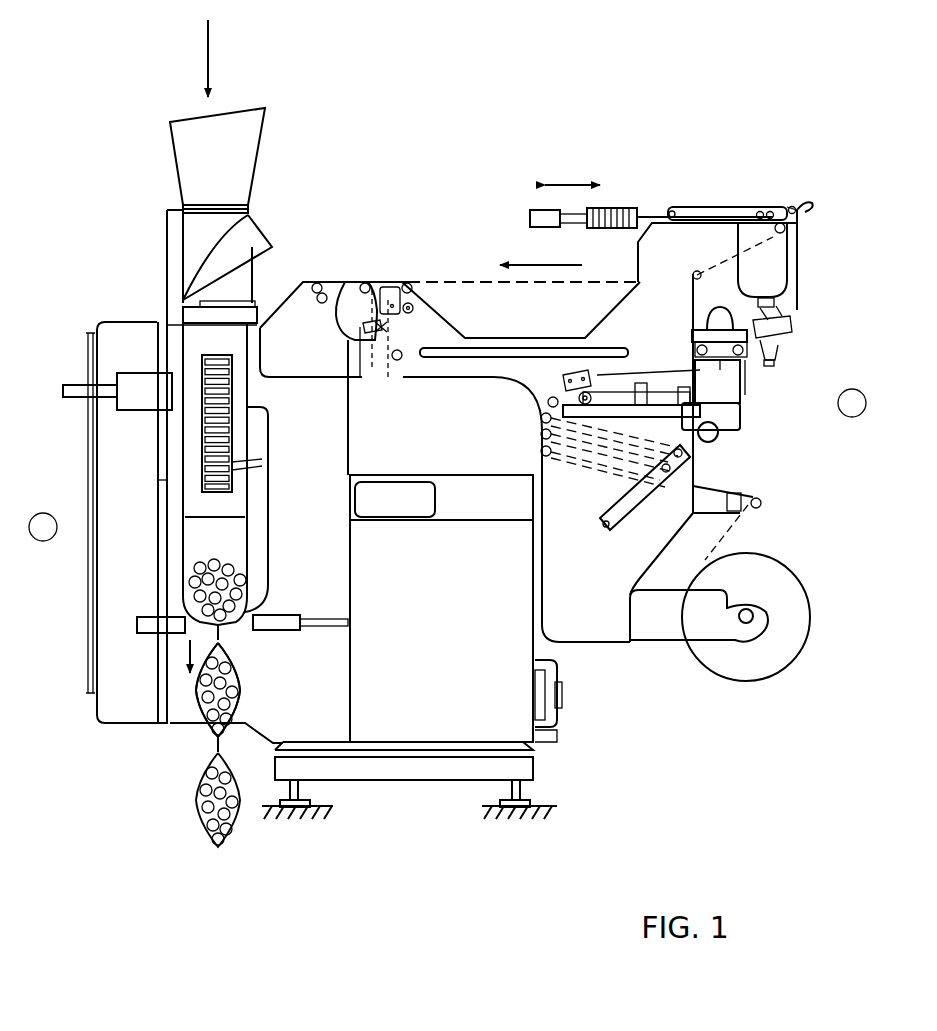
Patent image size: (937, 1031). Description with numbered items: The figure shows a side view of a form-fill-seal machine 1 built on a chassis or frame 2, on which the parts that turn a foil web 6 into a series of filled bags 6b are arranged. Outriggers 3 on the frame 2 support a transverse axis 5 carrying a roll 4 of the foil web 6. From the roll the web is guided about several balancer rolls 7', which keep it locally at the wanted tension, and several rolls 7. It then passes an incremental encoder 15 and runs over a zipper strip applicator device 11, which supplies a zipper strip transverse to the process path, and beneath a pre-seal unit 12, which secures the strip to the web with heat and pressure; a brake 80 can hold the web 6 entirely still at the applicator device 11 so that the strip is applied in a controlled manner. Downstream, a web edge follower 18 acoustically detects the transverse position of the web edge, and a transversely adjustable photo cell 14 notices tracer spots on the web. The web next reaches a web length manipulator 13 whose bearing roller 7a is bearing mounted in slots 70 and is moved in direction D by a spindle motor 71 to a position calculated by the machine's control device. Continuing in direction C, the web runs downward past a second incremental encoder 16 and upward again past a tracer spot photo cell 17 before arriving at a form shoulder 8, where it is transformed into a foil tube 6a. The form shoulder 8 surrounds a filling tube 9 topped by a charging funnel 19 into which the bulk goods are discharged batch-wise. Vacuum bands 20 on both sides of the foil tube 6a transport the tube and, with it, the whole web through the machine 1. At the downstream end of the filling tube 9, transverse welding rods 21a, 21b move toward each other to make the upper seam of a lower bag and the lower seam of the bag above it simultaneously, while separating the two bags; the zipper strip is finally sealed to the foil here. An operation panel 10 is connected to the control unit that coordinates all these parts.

The form-fill-seal machine 1 is at (152, 852).
The frame 2 is at (520, 693).
The outriggers 3 is at (670, 630).
The roll 4 is at (797, 640).
The transverse axis 5 is at (752, 610).
The foil web 6 is at (303, 282).
The foil tube 6a is at (197, 503).
The bags 6b is at (242, 673).
The rolls 7 is at (554, 352).
The balancer rolls 7' is at (647, 474).
The bearing roller 7a is at (672, 210).
The form shoulder 8 is at (205, 278).
The filling tube 9 is at (190, 228).
The operation panel 10 is at (400, 492).
The zipper strip applicator device 11 is at (730, 418).
The pre-seal unit 12 is at (768, 342).
The web length manipulator 13 is at (630, 210).
The photo cell 14 is at (797, 330).
The incremental encoder 15 is at (597, 375).
The incremental encoder 16 is at (393, 287).
The tracer spot photo cell 17 is at (347, 327).
The web edge follower 18 is at (773, 360).
The charging funnel 19 is at (247, 155).
The vacuum bands 20 is at (207, 433).
The transverse welding rod 21a is at (148, 613).
The transverse welding rod 21b is at (280, 625).
The slots 70 is at (760, 213).
The spindle motor 71 is at (615, 229).
The brake 80 is at (807, 205).